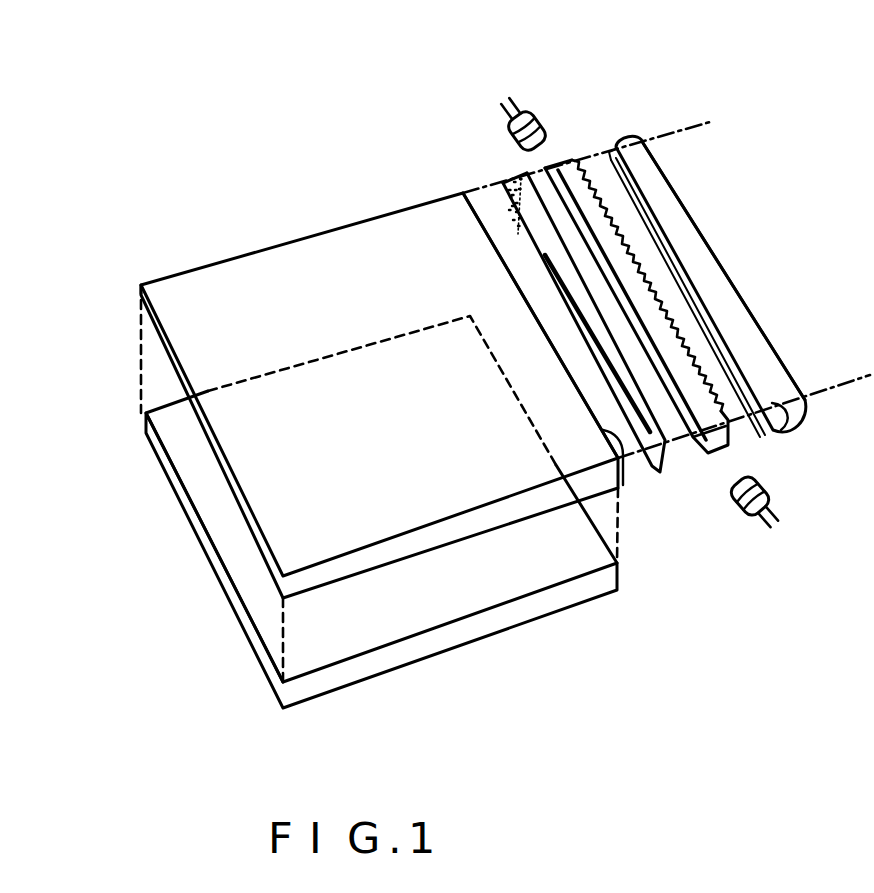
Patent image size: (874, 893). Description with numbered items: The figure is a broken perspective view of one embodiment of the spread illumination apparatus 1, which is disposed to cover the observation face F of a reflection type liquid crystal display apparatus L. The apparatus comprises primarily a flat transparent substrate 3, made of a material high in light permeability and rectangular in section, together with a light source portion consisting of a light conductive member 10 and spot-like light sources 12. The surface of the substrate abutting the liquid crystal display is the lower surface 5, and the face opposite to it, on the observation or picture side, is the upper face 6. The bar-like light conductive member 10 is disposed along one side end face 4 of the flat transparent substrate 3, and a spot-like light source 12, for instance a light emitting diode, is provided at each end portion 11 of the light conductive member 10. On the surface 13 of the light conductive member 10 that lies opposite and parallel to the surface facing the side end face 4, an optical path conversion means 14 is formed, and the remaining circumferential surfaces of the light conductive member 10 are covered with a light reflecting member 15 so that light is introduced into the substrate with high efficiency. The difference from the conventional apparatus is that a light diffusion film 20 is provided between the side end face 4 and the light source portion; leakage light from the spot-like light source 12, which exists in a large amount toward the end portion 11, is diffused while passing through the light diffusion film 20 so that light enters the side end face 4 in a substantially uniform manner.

The spread illumination apparatus 1 is at (677, 91).
The flat transparent substrate 3 is at (165, 369).
The one side end face 4 is at (623, 485).
The lower surface 5 is at (218, 477).
The upper face 6 is at (340, 247).
The light conductive member 10 is at (641, 342).
The end portion 11 is at (562, 163).
The spot-like light source 12 is at (540, 118).
The surface opposite 13 is at (733, 286).
The optical path conversion means 14 is at (633, 268).
The light reflecting member 15 is at (718, 278).
The light diffusion film 20 is at (518, 180).
The reflection type liquid crystal display apparatus L is at (207, 564).
The observation face F is at (512, 590).